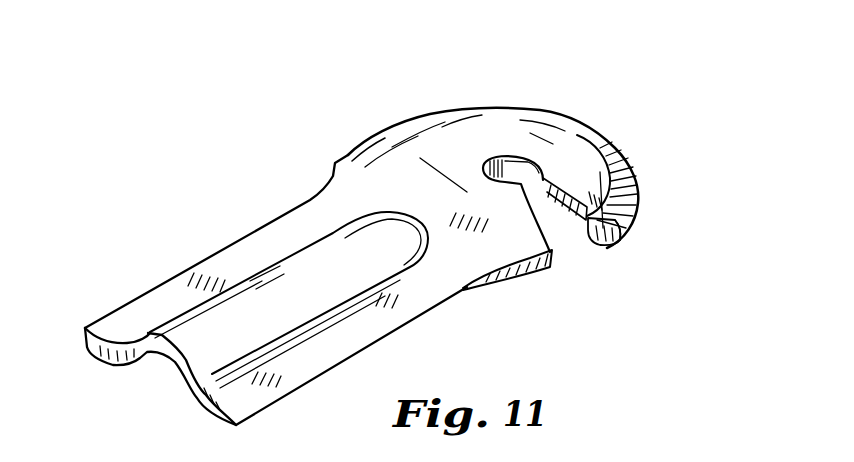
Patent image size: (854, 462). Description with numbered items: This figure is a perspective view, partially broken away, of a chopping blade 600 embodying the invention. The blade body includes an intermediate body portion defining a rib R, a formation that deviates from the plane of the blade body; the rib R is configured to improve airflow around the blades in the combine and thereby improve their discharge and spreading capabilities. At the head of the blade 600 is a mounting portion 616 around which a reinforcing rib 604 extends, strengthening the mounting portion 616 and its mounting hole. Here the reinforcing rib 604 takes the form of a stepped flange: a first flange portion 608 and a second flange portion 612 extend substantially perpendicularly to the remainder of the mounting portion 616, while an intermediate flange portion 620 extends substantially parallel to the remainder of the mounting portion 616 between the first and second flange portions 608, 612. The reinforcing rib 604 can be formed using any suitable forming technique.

The blade 600 is at (406, 242).
The reinforcing rib 604 is at (652, 200).
The first flange portion 608 is at (570, 200).
The second flange portion 612 is at (620, 235).
The mounting portion 616 is at (510, 115).
The intermediate flange portion 620 is at (595, 224).
The rib R is at (318, 257).